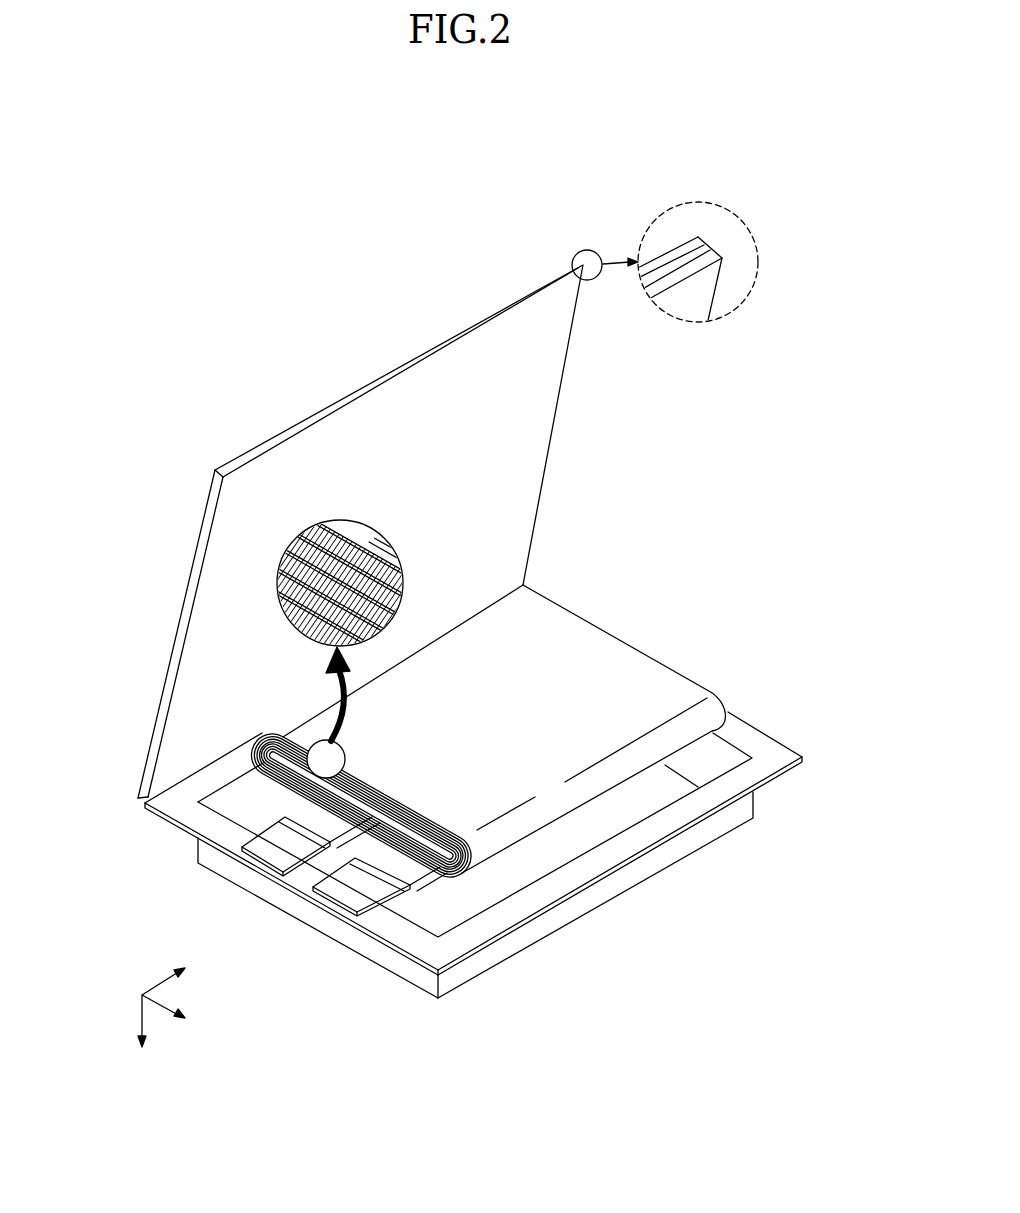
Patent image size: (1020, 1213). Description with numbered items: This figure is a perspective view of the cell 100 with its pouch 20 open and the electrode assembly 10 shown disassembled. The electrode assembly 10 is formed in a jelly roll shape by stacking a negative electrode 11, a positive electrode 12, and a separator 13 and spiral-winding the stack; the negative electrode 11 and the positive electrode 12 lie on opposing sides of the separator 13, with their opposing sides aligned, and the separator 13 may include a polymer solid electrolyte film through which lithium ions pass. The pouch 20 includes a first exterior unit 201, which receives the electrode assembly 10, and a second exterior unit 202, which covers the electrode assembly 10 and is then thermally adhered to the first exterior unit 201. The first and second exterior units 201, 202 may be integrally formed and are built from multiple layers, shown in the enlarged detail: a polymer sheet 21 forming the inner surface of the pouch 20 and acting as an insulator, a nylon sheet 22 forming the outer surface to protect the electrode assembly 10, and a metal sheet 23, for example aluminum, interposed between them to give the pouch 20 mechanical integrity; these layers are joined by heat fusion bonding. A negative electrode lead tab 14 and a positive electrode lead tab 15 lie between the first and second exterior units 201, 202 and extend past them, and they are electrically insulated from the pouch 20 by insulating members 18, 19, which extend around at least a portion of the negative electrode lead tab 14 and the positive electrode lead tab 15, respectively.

The cell 100 is at (318, 300).
The electrode assembly 10 is at (590, 615).
The negative electrode 11 is at (278, 577).
The positive electrode 12 is at (290, 548).
The separator 13 is at (402, 588).
The negative electrode lead tab 14 is at (273, 858).
The positive electrode lead tab 15 is at (347, 898).
The insulating member 18 is at (313, 850).
The insulating member 19 is at (390, 890).
The pouch 20 is at (706, 492).
The first exterior unit 201 is at (572, 880).
The second exterior unit 202 is at (188, 582).
The polymer sheet 21 is at (703, 258).
The nylon sheet 22 is at (667, 258).
The metal sheet 23 is at (683, 258).